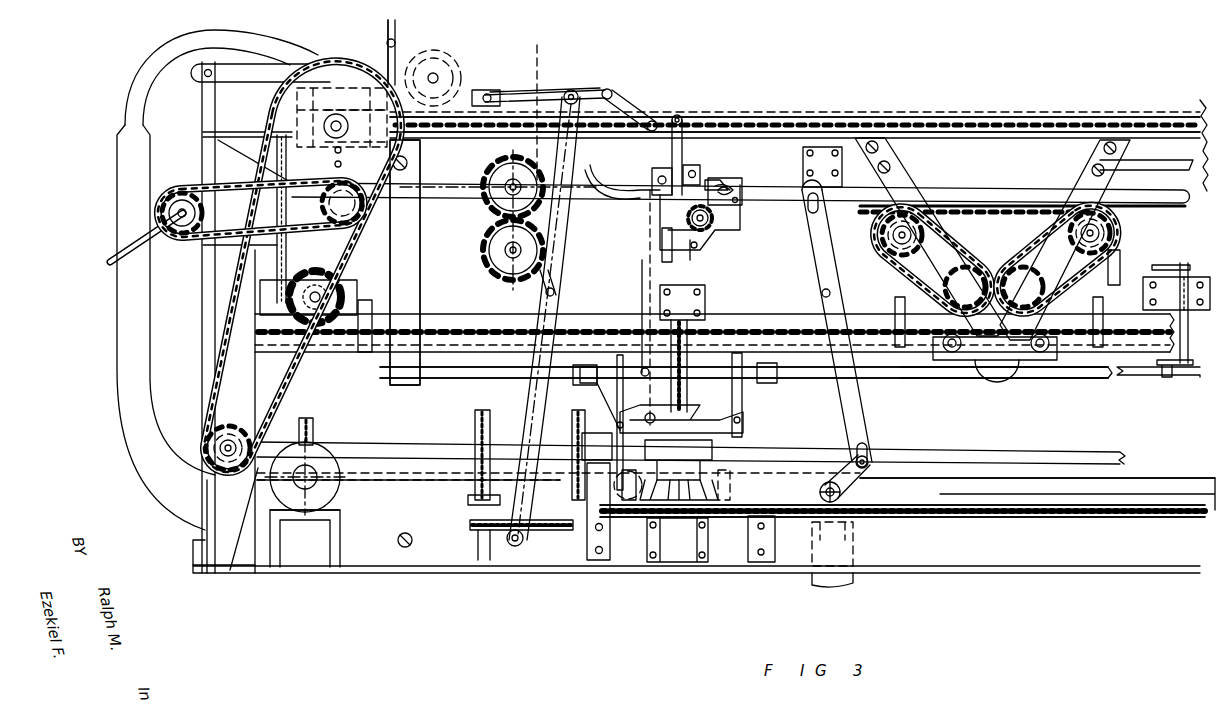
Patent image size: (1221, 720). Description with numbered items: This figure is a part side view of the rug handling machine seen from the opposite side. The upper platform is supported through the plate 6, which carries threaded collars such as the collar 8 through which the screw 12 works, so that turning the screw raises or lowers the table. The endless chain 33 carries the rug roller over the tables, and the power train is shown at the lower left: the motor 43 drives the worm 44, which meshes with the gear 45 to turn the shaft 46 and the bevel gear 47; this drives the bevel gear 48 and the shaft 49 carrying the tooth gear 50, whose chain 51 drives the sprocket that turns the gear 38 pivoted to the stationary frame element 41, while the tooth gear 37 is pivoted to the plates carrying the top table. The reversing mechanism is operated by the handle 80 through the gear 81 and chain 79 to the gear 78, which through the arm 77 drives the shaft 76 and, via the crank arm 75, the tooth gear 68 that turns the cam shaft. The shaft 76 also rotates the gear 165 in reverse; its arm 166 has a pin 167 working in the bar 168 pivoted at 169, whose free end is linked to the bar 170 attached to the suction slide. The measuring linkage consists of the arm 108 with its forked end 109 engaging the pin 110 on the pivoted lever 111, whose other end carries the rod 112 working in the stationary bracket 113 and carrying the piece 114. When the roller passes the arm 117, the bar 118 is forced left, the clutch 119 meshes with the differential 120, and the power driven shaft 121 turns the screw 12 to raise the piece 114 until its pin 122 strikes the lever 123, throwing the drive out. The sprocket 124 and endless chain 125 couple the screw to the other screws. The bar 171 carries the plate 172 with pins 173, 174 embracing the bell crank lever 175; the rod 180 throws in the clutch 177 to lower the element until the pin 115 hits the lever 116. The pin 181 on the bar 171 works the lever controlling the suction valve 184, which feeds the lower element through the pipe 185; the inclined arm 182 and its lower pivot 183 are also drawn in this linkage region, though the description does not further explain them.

The plate 6 is at (885, 250).
The threaded collar 8 is at (660, 298).
The screw 12 is at (671, 390).
The chain 33 is at (1000, 112).
The tooth gear 37 is at (270, 323).
The gear 38 is at (340, 60).
The stationary frame element 41 is at (322, 120).
The motor 43 is at (338, 520).
The worm 44 is at (303, 492).
The gear 45 is at (310, 420).
The shaft 46 is at (258, 468).
The bevel gear 47 is at (202, 573).
The bevel gear 48 is at (212, 480).
The shaft 49 is at (218, 467).
The tooth gear 50 is at (210, 432).
The chain 51 is at (228, 352).
The tooth gear 68 is at (490, 210).
The crank arm 75 is at (535, 108).
The shaft 76 is at (488, 92).
The arm 77 is at (372, 210).
The gear 78 is at (325, 204).
The chain 79 is at (265, 178).
The handle 80 is at (130, 238).
The gear 81 is at (178, 188).
The arm 108 is at (560, 92).
The forked end 109 is at (610, 90).
The pin 110 is at (625, 100).
The pivoted lever 111 is at (652, 120).
The rod 112 is at (683, 150).
The stationary bracket 113 is at (695, 165).
The piece 114 is at (705, 238).
The pin 115 is at (715, 250).
The lever 116 is at (715, 242).
The arm 117 is at (412, 55).
The bar 118 is at (490, 380).
The clutch 119 is at (628, 488).
The differential 120 is at (679, 470).
The power driven shaft 121 is at (447, 483).
The pin 122 is at (650, 175).
The lever 123 is at (700, 185).
The sprocket 124 is at (676, 520).
The chain 125 is at (958, 506).
The gear 165 is at (485, 257).
The arm 166 is at (541, 285).
The pin 167 is at (560, 275).
The bar 168 is at (556, 245).
The pivot 169 is at (513, 546).
The bar 170 is at (540, 90).
The bar 171 is at (602, 168).
The plate 172 is at (732, 178).
The pin 173 is at (730, 185).
The pin 174 is at (740, 190).
The bell crank lever 175 is at (745, 195).
The clutch 177 is at (722, 500).
The rod 180 is at (1078, 378).
The pin 181 is at (810, 195).
The arm 182 is at (858, 410).
The pivot 183 is at (842, 490).
The suction valve 184 is at (825, 480).
The pipe 185 is at (1165, 478).